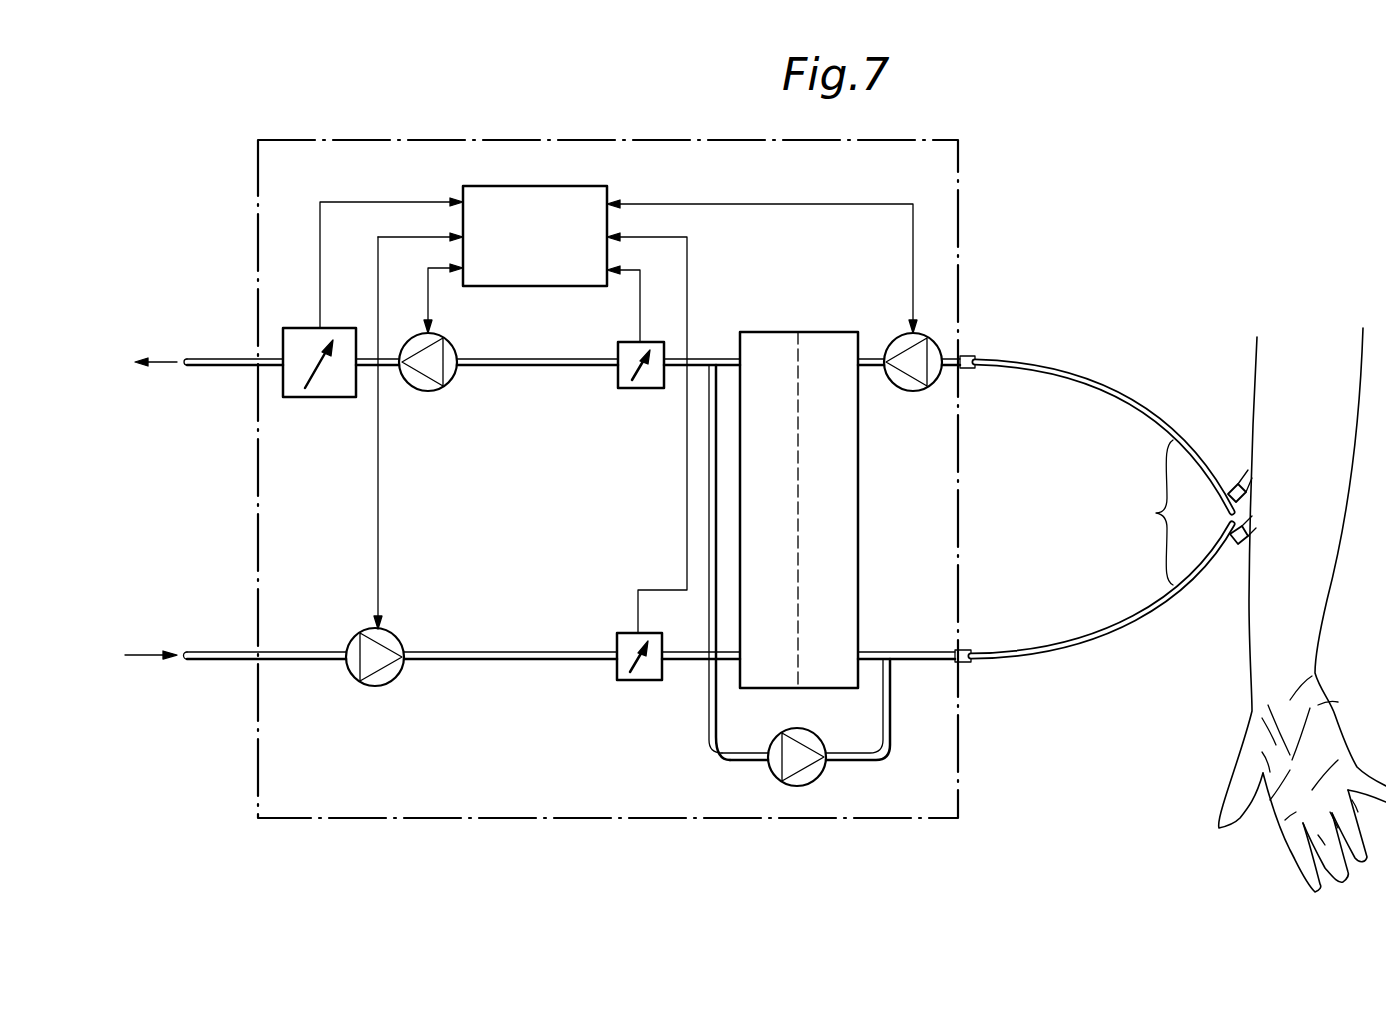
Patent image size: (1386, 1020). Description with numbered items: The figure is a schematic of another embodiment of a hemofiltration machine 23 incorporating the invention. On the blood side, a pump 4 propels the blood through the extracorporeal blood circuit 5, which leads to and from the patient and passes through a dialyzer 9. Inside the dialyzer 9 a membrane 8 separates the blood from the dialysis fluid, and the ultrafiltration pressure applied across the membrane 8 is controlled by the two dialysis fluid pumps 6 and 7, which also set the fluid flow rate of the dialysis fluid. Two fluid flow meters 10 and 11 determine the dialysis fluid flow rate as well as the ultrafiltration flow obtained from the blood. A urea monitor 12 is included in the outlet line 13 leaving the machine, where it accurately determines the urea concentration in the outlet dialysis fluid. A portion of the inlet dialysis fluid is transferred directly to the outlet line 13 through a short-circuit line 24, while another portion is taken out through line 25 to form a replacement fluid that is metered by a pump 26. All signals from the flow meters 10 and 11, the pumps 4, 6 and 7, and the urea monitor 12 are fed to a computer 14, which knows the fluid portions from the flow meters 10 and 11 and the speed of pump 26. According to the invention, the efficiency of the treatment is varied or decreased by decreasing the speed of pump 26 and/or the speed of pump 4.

The pump 4 is at (908, 386).
The extracorporeal blood circuit 5 is at (1105, 509).
The pump 6 is at (385, 636).
The pump 7 is at (427, 386).
The membrane 8 is at (793, 372).
The dialyzer 9 is at (819, 343).
The fluid flow meter 10 is at (625, 645).
The fluid flow meter 11 is at (652, 380).
The urea monitor 12 is at (336, 388).
The outlet line 13 is at (229, 358).
The computer 14 is at (592, 200).
The hemofiltration machine 23 is at (622, 140).
The short-circuit line 24 is at (708, 517).
The line 25 is at (708, 727).
The pump 26 is at (808, 776).